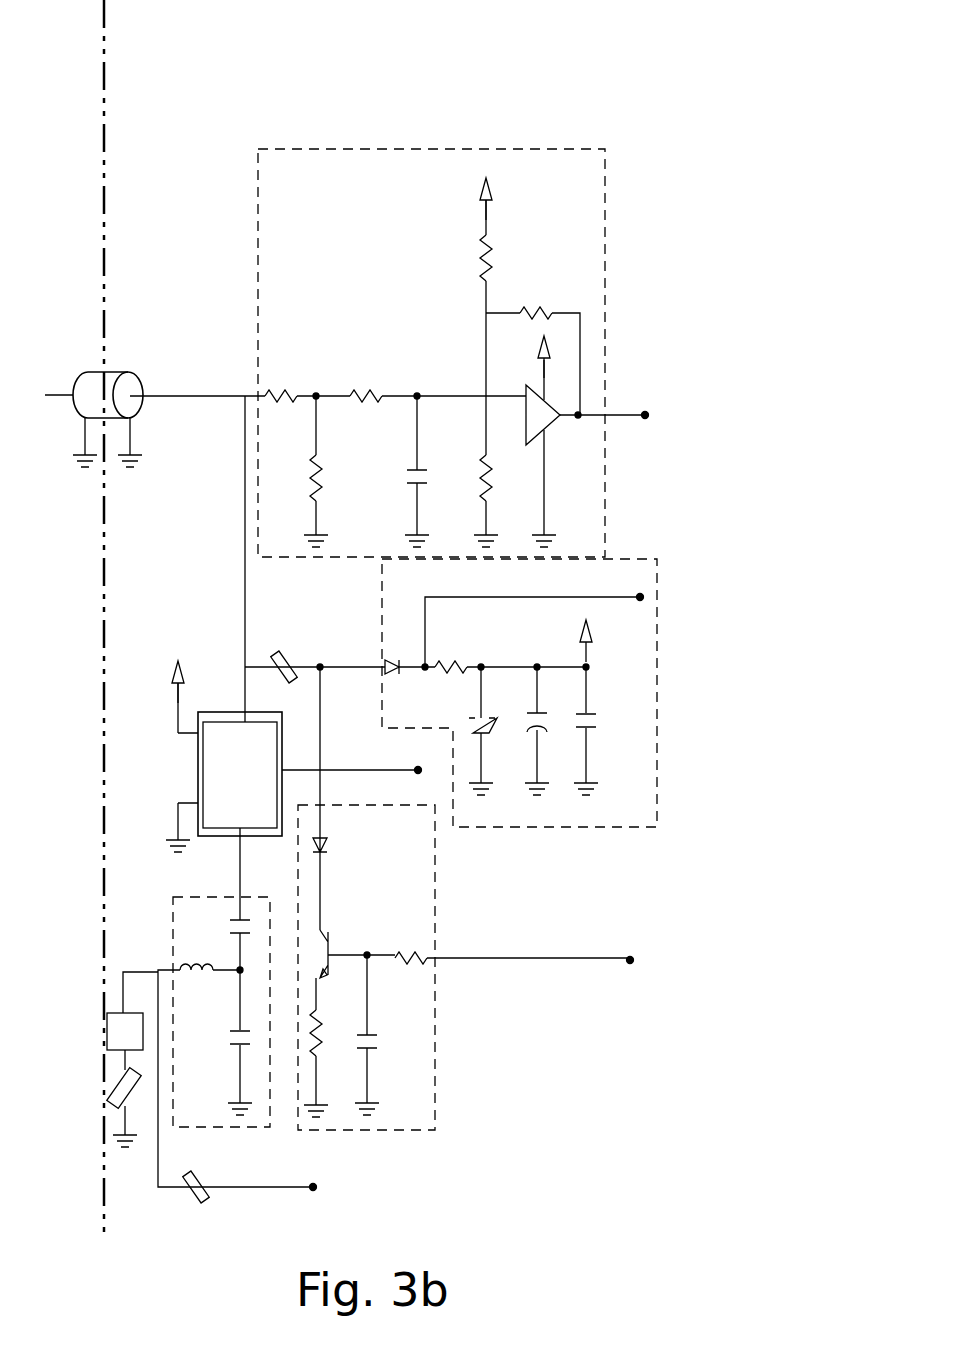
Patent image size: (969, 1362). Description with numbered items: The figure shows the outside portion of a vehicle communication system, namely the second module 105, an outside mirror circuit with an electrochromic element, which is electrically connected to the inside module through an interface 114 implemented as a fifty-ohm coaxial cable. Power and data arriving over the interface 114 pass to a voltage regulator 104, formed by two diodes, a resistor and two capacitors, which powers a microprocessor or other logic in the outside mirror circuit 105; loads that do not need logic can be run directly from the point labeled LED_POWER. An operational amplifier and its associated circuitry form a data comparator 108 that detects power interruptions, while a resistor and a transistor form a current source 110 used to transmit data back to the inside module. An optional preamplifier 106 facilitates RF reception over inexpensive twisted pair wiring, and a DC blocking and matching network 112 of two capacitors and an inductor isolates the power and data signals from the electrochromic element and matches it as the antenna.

The voltage regulator 104 is at (657, 563).
The second module 105 is at (695, 963).
The optional preamplifier 106 is at (197, 762).
The data comparator 108 is at (565, 149).
The current source 110 is at (435, 1020).
The DC blocking and matching network 112 is at (173, 912).
The interface 114 is at (108, 363).